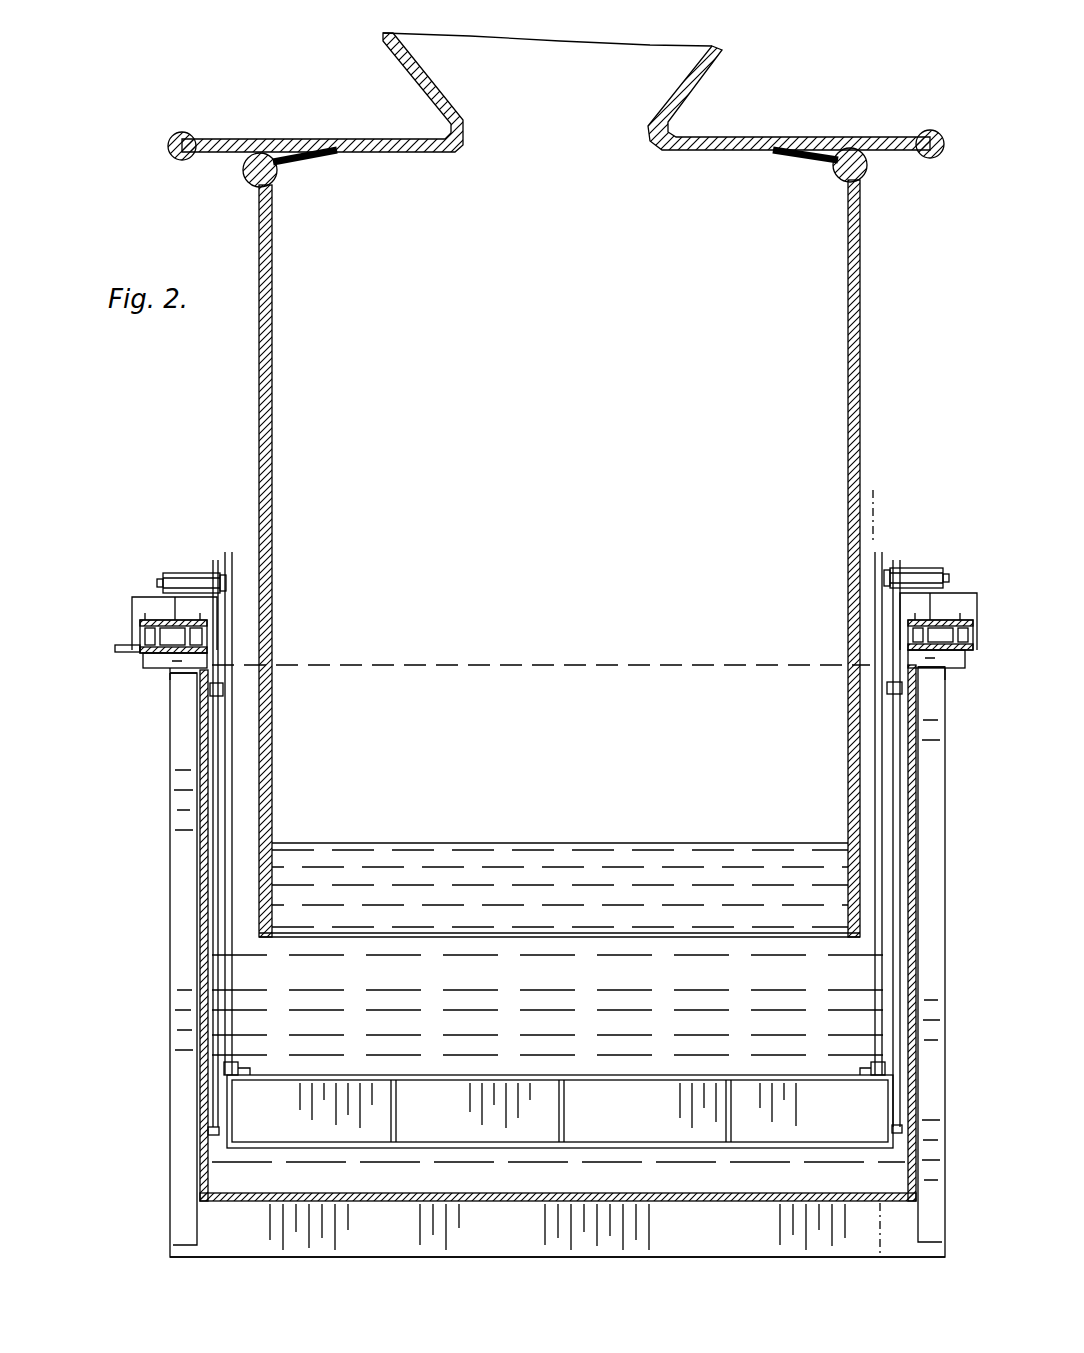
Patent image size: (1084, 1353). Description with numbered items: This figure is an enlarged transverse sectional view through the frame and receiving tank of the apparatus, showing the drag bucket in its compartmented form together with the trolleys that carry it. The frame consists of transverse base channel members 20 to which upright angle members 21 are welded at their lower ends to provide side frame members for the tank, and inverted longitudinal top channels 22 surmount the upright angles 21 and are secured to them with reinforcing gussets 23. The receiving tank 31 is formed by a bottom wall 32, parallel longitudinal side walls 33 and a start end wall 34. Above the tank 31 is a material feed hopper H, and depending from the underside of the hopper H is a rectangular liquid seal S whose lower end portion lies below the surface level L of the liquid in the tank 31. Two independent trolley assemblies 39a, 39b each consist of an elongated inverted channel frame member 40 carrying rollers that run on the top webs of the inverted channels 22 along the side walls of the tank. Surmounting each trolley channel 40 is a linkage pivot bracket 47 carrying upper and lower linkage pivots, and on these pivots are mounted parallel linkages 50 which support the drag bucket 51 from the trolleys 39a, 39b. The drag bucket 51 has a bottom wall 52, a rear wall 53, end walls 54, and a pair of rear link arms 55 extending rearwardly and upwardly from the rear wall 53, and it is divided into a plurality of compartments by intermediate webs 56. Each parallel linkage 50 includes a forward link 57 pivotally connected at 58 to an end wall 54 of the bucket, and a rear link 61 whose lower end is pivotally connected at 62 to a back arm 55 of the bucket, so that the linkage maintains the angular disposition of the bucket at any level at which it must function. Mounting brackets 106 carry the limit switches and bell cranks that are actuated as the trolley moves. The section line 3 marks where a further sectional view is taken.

The material feed hopper H is at (712, 85).
The rectangular liquid seal S is at (862, 345).
The surface level of liquid L is at (536, 845).
The section line 3— 3 is at (903, 522).
The transverse base channel members 20 is at (470, 1250).
The upright angle members 21 is at (173, 826).
The inverted longitudinal top channels 22 is at (148, 666).
The reinforcing gussets 23 is at (165, 692).
The receiving tank 31 is at (390, 1205).
The bottom wall 32 is at (500, 1203).
The longitudinal side walls 33 is at (201, 896).
The start end wall 34 is at (866, 668).
The trolley assembly 39a is at (135, 560).
The trolley assembly 39b is at (972, 570).
The inverted channel frame member 40 is at (132, 600).
The linkage pivot bracket 47 is at (196, 566).
The parallel linkages 50 is at (242, 1015).
The drag bucket 51 is at (487, 1065).
The bottom wall 52 is at (585, 1148).
The rear wall 53 is at (540, 1095).
The end walls 54 is at (232, 1110).
The rear link arms 55 is at (240, 1062).
The intermediate webs 56 is at (397, 1105).
The forward link 57 is at (222, 1053).
The pivot 58 is at (208, 1133).
The rear link 61 is at (240, 985).
The pivot 62 is at (250, 1070).
The mounting brackets 106 is at (125, 648).